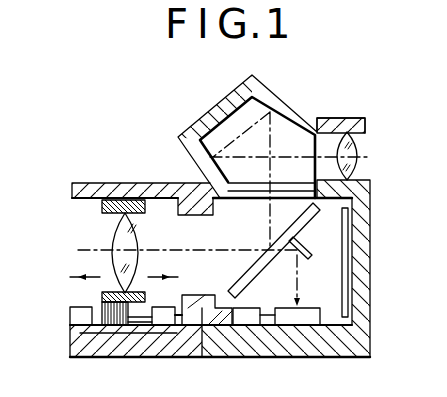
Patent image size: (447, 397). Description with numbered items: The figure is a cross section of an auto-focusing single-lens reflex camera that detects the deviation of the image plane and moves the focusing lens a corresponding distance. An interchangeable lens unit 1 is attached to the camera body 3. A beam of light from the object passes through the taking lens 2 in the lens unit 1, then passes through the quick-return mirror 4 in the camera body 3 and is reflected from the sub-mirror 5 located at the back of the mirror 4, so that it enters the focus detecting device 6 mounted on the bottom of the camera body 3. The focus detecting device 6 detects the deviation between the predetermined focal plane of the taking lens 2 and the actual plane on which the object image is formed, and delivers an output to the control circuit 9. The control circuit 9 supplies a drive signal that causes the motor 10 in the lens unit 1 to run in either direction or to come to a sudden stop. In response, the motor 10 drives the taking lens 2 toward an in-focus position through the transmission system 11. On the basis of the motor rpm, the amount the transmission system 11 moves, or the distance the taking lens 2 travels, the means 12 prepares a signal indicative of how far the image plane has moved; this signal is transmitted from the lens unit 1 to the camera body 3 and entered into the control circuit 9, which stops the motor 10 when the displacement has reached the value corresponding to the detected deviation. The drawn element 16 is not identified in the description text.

The interchangeable lens unit 1 is at (138, 192).
The taking lens 2 is at (117, 227).
The camera body 3 is at (368, 190).
The quick-return mirror 4 is at (315, 218).
The sub-mirror 5 is at (307, 257).
The focus detecting device 6 is at (305, 312).
The control circuit 9 is at (250, 320).
The motor 10 is at (160, 320).
The transmission system 11 is at (117, 327).
The means 12 is at (73, 313).
The eyepiece lens 16 is at (293, 135).